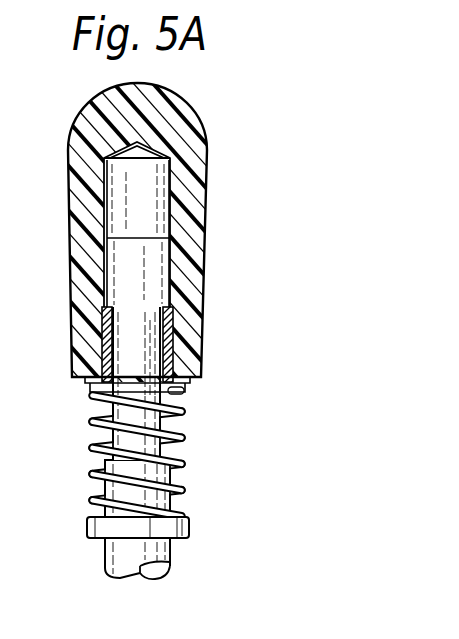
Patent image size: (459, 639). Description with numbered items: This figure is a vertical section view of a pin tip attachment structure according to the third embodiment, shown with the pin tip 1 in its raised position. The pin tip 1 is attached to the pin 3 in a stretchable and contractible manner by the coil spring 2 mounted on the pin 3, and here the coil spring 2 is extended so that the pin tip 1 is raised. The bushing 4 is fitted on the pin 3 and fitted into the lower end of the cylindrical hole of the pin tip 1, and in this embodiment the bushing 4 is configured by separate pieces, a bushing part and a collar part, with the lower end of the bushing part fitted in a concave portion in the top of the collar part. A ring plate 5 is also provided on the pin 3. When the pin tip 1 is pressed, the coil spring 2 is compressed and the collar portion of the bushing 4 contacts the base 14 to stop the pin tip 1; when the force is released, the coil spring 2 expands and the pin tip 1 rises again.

The pin tip 1 is at (177, 125).
The coil spring 2 is at (185, 434).
The pin 3 is at (150, 552).
The bushing with collar 4 is at (168, 316).
The ring plate 5 is at (168, 526).
The base 14 is at (105, 463).